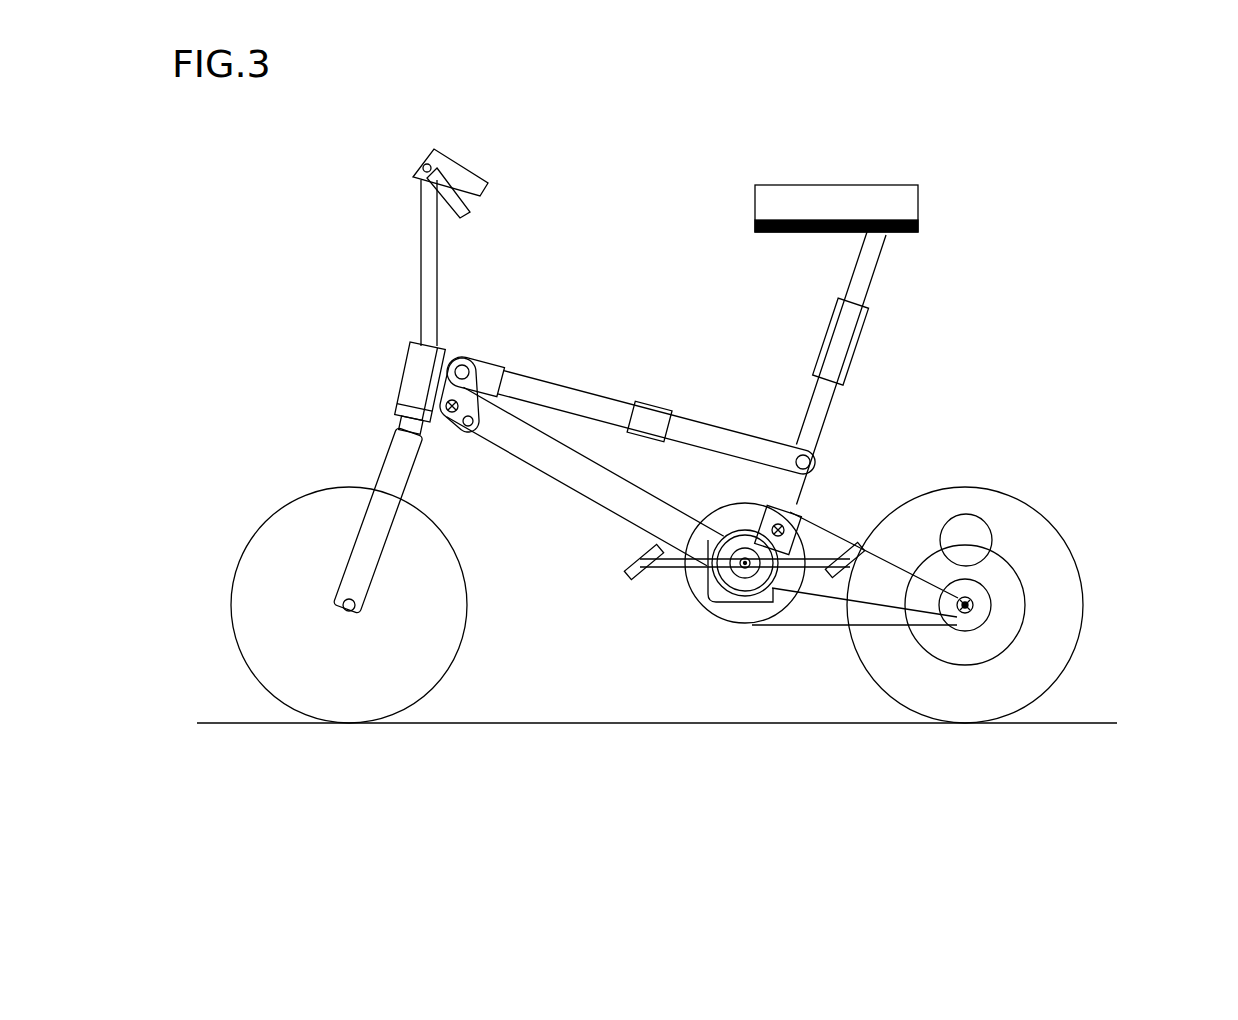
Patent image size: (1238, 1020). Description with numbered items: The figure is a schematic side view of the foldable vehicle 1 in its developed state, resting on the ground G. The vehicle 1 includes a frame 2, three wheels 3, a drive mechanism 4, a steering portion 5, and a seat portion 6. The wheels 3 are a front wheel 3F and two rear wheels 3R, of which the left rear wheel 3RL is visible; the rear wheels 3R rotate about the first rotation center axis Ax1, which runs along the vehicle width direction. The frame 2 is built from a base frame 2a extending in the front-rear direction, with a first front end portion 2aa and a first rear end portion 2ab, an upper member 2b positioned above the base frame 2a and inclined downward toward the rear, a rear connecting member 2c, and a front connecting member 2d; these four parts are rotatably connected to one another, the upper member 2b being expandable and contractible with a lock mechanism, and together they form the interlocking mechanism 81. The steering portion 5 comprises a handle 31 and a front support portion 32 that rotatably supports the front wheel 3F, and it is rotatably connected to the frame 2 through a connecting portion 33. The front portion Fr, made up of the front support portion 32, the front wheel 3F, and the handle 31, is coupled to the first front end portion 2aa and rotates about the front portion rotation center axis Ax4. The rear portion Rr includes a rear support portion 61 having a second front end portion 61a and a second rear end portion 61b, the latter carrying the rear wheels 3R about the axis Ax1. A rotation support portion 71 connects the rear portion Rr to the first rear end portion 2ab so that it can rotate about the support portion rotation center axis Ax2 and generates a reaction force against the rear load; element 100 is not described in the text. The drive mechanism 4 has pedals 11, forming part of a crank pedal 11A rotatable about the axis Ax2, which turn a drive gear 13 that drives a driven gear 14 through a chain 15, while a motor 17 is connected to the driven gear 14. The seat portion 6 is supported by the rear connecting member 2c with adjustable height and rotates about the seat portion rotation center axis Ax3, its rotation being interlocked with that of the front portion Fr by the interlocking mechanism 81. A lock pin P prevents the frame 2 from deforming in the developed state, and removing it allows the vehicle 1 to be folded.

The vehicle 1 is at (921, 121).
The frame 2 is at (609, 403).
The base frame 2a is at (527, 467).
The first front end portion 2aa is at (452, 432).
The first rear end portion 2ab is at (720, 513).
The upper member 2b is at (667, 396).
The rear connecting member 2c is at (815, 462).
The front connecting member 2d is at (480, 388).
The wheels 3 is at (680, 619).
The front wheel 3F is at (231, 606).
The rear wheels 3R is at (1024, 605).
The left rear wheel 3RL is at (1083, 611).
The drive mechanism 4 is at (720, 671).
The steering portion 5 is at (450, 162).
The handle 31 is at (440, 150).
The front support portion 32 is at (397, 460).
The connecting portion 33 is at (408, 368).
The seat portion 6 is at (836, 185).
The pedals 11 is at (630, 562).
The crank pedal 11A is at (672, 573).
The drive gear 13 is at (752, 610).
The driven gear 14 is at (975, 667).
The chain 15 is at (840, 628).
The motor 17 is at (968, 514).
The rear support portion 61 is at (872, 612).
The second front end portion 61a is at (728, 618).
The second rear end portion 61b is at (950, 632).
The rotation support portion 71 is at (745, 479).
The power transmission device 100 is at (745, 503).
The interlocking mechanism 81 is at (474, 375).
The first rotation center axis Ax1 is at (973, 604).
The support portion rotation center axis Ax2 is at (738, 575).
The seat portion rotation center axis Ax3 is at (790, 528).
The front portion rotation center axis Ax4 is at (446, 405).
The lock pin P is at (489, 445).
The front portion Fr is at (421, 232).
The rear portion Rr is at (1046, 697).
The ground G is at (1097, 722).